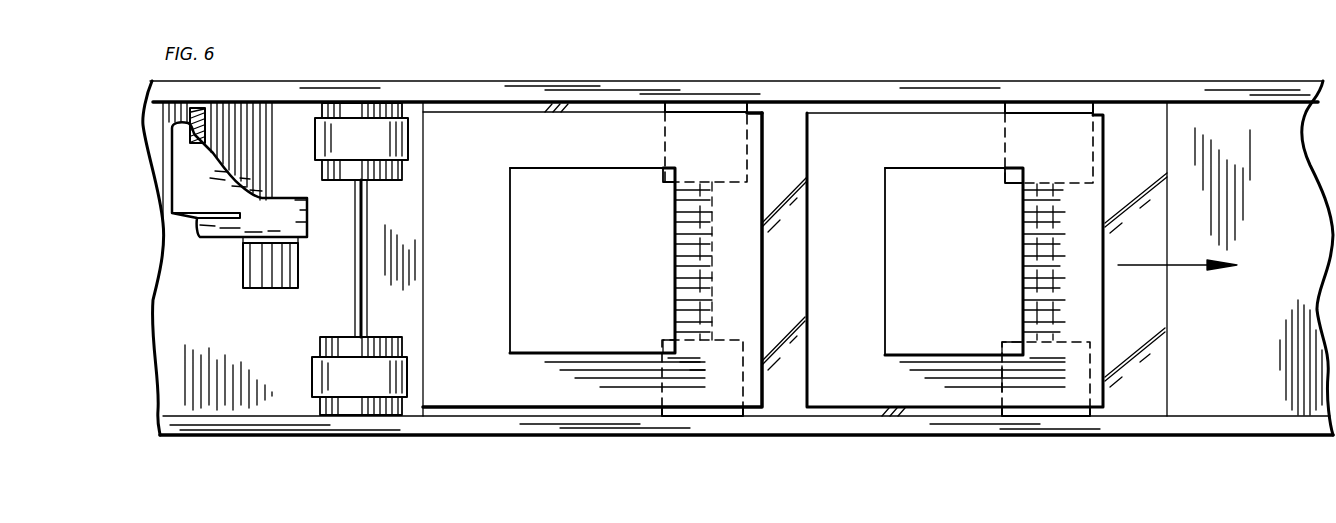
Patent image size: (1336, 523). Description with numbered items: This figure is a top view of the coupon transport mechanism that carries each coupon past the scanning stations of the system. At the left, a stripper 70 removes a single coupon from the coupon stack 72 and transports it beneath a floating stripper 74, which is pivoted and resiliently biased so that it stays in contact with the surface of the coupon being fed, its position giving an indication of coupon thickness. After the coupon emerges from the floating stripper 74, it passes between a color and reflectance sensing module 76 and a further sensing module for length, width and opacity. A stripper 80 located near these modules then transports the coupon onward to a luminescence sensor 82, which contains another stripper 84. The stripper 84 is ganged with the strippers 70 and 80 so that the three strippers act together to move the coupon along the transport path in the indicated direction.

The stop block 70 is at (247, 277).
The operator hand 72 is at (177, 172).
The guide rollers 74 is at (347, 125).
The first pallet frame 76 is at (455, 127).
The clamp members 80 is at (698, 130).
The second pallet frame 82 is at (930, 135).
The clamp members 84 is at (1057, 127).